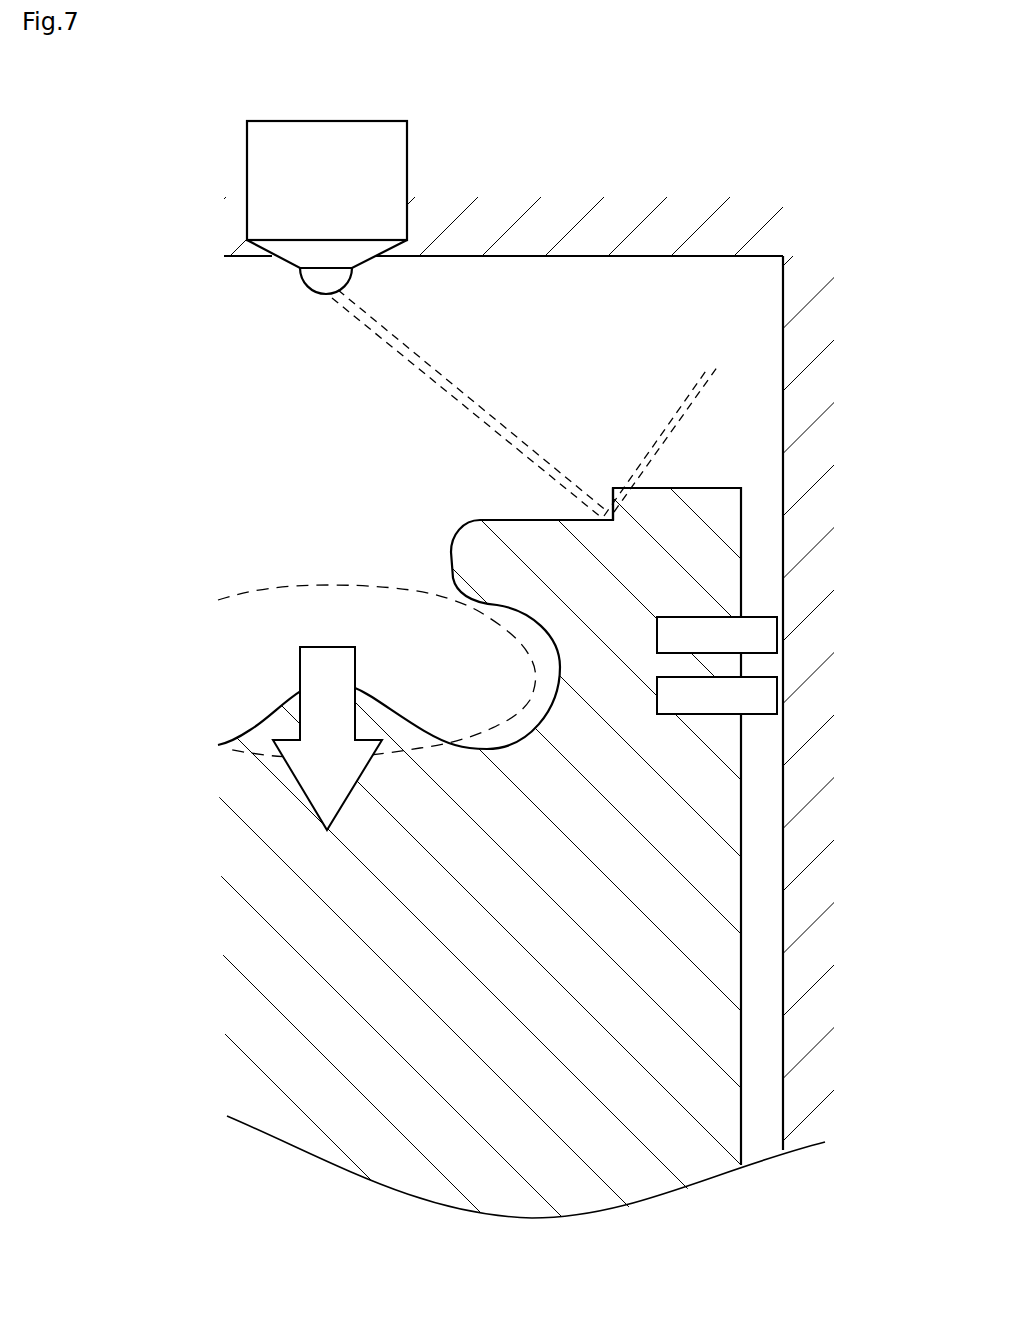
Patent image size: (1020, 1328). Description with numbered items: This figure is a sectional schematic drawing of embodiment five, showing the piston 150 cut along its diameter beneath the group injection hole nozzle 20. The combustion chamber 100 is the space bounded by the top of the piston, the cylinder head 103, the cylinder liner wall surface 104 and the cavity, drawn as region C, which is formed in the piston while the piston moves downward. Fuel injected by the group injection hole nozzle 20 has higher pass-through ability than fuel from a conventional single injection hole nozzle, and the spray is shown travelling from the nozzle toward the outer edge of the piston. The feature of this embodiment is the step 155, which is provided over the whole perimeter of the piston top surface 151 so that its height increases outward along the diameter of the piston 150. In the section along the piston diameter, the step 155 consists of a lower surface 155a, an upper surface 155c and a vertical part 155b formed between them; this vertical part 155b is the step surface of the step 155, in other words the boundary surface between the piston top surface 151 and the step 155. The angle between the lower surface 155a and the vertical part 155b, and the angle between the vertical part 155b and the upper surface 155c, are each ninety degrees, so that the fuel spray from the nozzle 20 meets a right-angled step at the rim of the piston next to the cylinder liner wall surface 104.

The group injection hole nozzle 20 is at (498, 181).
The cylinder head 103 is at (228, 342).
The cylinder liner wall surface 104 is at (783, 312).
The piston top surface 151 is at (797, 408).
The piston 150 is at (510, 855).
The combustion chamber 100 is at (337, 437).
The step 155 is at (608, 512).
The lower surface 155a is at (480, 520).
The vertical part 155b is at (600, 517).
The upper surface 155c is at (664, 490).
The cavity region C is at (377, 663).